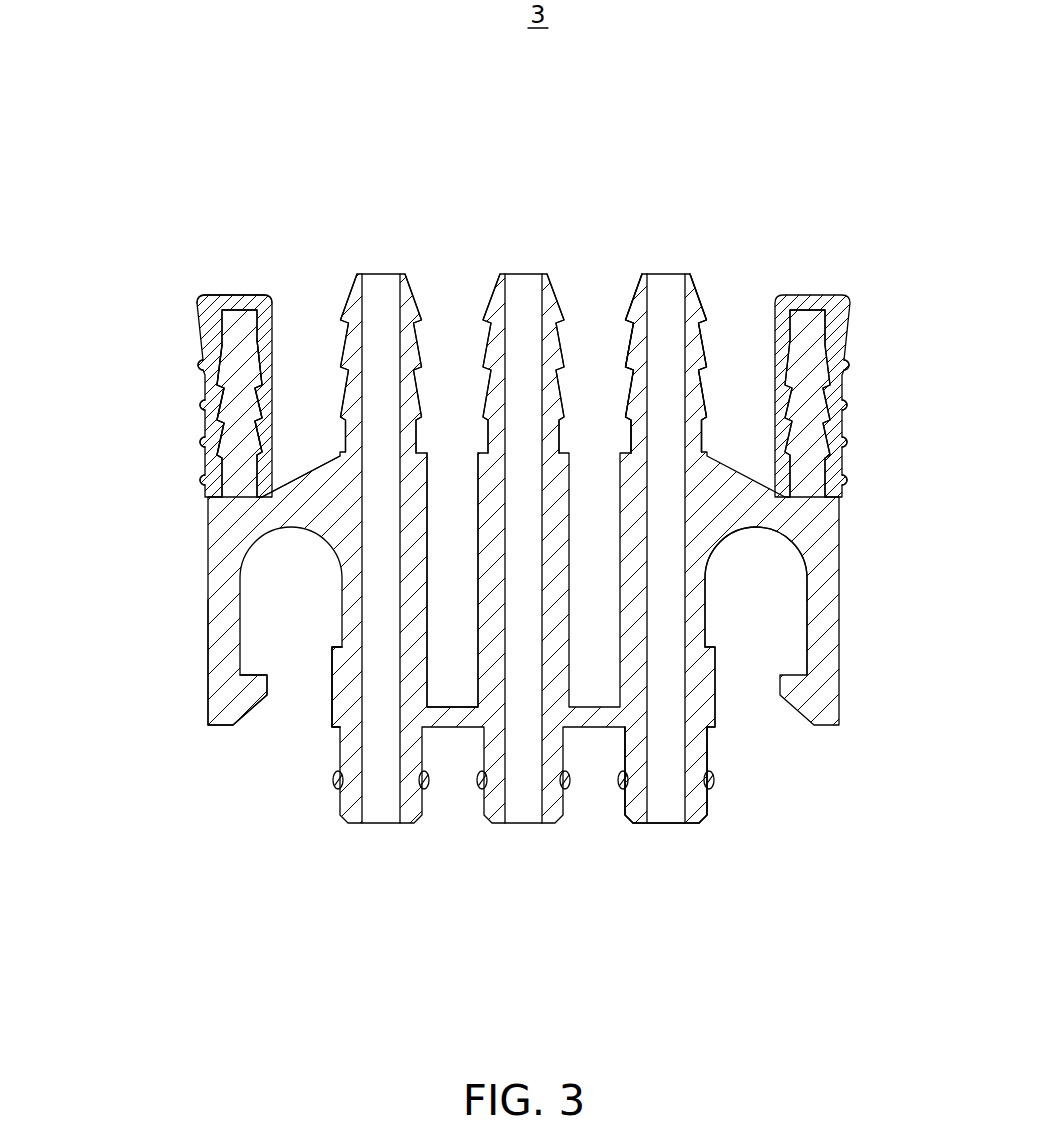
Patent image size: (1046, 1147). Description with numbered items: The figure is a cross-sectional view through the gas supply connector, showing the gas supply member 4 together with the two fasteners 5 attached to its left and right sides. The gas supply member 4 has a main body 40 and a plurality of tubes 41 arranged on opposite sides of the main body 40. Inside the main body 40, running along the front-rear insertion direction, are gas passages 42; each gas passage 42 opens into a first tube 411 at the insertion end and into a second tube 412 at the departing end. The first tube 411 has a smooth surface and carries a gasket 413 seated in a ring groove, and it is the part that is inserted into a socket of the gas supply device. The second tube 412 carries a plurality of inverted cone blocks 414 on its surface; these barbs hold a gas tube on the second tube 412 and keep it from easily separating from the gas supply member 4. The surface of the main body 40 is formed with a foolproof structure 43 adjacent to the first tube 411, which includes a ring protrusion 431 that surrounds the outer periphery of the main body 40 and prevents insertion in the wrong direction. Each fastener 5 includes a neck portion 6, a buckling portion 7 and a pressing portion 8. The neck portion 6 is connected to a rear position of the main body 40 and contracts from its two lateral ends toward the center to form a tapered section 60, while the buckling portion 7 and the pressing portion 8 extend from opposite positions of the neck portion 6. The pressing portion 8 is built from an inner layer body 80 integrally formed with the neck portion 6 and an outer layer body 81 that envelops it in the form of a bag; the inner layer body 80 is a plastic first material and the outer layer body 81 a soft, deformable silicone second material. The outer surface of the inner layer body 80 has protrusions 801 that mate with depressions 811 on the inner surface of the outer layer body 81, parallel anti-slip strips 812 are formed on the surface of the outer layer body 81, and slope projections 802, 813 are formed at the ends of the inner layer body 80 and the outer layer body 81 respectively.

The gas supply member 4 is at (530, 266).
The main body 40 is at (453, 453).
The tubes 41 is at (721, 567).
The first tube 411 is at (702, 758).
The second tube 412 is at (650, 318).
The gasket 413 is at (620, 786).
The inverted cone blocks 414 is at (627, 360).
The gas passage 42 is at (383, 312).
The foolproof structure 43 is at (523, 687).
The ring protrusion 431 is at (330, 690).
The fastener 5 is at (172, 530).
The neck portion 6 is at (738, 528).
The tapered section 60 is at (300, 508).
The buckling portion 7 is at (207, 683).
The pressing portion 8 is at (205, 456).
The inner layer body 80 is at (240, 410).
The outer layer body 81 is at (243, 305).
The protrusions 801 is at (787, 378).
The slope projection 802 is at (830, 320).
The depressions 811 is at (822, 435).
The anti-slip strips 812 is at (205, 370).
The slope projection 813 is at (205, 308).